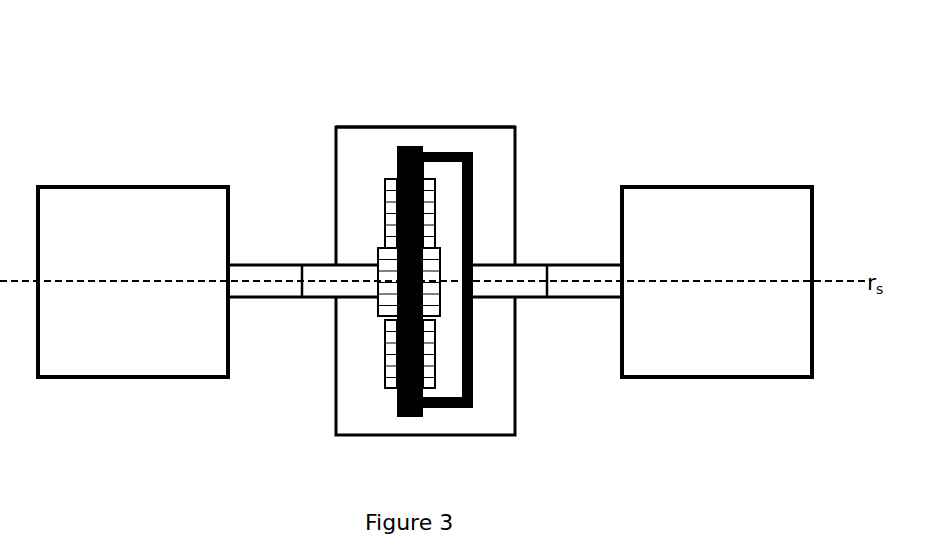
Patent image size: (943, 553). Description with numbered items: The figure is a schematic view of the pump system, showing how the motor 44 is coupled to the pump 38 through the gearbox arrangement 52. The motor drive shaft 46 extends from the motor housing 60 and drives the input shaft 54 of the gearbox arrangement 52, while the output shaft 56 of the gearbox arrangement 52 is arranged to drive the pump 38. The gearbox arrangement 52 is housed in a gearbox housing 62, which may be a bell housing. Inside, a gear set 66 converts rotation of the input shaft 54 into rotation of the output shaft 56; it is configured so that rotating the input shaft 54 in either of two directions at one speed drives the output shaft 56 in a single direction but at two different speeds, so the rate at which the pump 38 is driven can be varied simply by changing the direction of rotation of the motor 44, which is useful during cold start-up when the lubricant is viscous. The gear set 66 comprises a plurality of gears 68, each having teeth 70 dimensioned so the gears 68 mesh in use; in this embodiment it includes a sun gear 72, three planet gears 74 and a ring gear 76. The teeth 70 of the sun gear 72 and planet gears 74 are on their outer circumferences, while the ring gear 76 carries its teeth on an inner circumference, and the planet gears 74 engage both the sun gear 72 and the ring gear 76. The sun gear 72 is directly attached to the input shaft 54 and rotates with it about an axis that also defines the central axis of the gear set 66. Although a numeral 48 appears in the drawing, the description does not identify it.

The pump 38 is at (716, 180).
The motor 44 is at (127, 180).
The motor drive shaft 46 is at (250, 263).
The second shaft 48 is at (590, 298).
The gearbox arrangement 52 is at (372, 98).
The input shaft 54 is at (318, 298).
The output shaft 56 is at (523, 263).
The motor housing 60 is at (50, 186).
The gearbox housing 62 is at (485, 127).
The gear set 66 is at (452, 418).
The gears 68 is at (433, 342).
The teeth 70 is at (388, 195).
The sun gear 72 is at (378, 258).
The planet gears 74 is at (385, 185).
The ring gear 76 is at (410, 146).